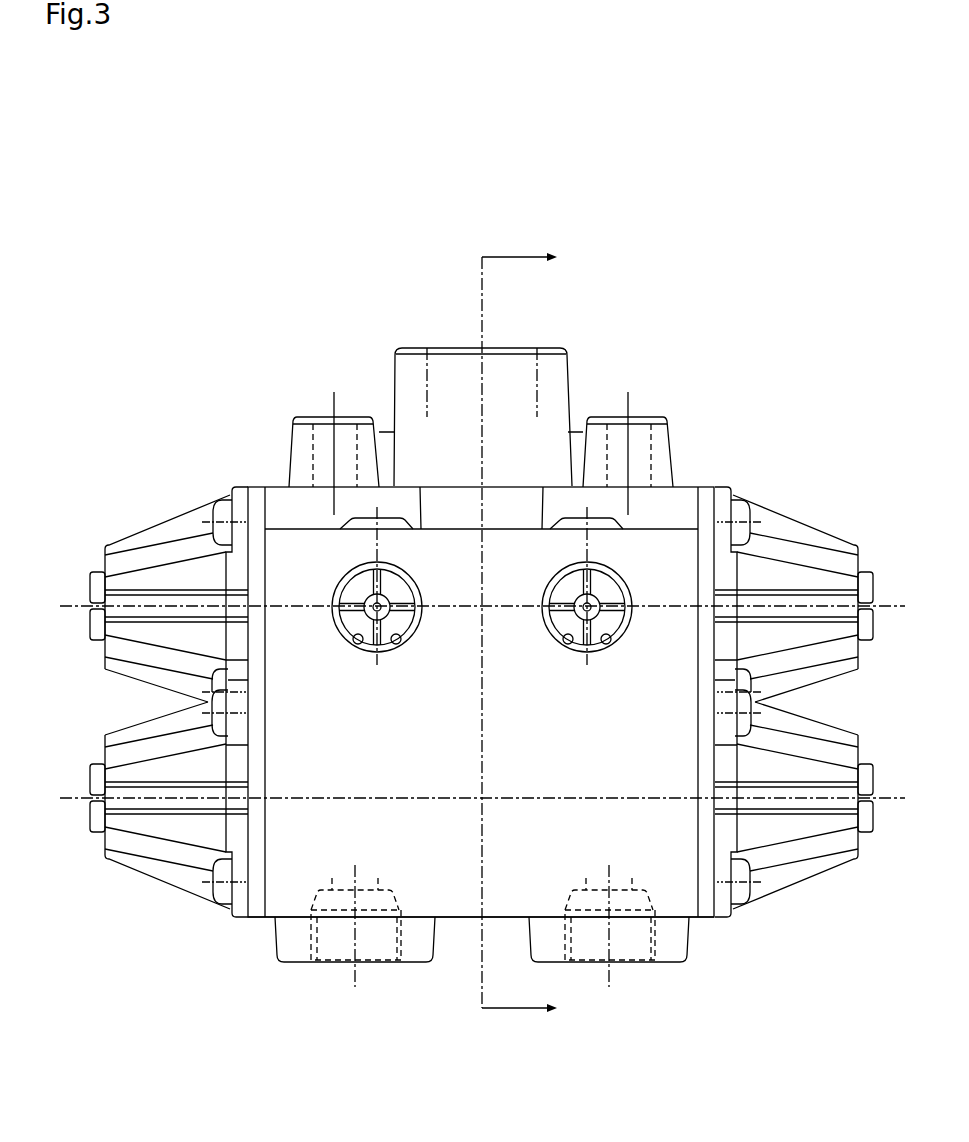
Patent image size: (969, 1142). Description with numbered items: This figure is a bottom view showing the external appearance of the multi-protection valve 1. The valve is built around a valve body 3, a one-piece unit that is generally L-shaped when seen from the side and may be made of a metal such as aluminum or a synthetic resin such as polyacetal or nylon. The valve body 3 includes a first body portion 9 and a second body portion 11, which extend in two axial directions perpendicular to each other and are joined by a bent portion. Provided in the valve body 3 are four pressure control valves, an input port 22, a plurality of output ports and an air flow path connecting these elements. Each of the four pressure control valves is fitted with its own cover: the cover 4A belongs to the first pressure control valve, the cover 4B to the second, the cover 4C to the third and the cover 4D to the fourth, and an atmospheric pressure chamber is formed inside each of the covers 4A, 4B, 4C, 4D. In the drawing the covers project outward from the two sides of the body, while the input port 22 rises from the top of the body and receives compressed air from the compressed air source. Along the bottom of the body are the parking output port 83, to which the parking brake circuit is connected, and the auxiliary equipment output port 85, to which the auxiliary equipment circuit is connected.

The multi-protection valve 1 is at (772, 315).
The valve body 3 is at (468, 922).
The cover 4A is at (142, 527).
The cover 4B is at (805, 515).
The cover 4C is at (168, 892).
The cover 4D is at (795, 888).
The first body portion 9 is at (687, 907).
The second body portion 11 is at (683, 483).
The input port 22 is at (448, 347).
The parking output port 83 is at (337, 965).
The auxiliary equipment output port 85 is at (630, 963).